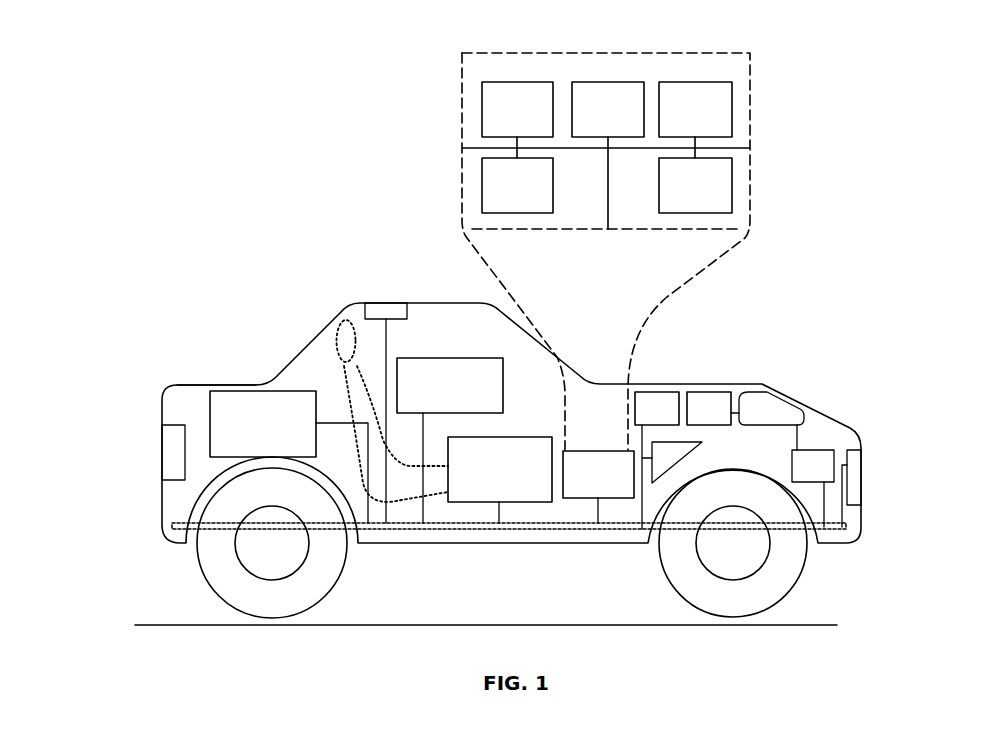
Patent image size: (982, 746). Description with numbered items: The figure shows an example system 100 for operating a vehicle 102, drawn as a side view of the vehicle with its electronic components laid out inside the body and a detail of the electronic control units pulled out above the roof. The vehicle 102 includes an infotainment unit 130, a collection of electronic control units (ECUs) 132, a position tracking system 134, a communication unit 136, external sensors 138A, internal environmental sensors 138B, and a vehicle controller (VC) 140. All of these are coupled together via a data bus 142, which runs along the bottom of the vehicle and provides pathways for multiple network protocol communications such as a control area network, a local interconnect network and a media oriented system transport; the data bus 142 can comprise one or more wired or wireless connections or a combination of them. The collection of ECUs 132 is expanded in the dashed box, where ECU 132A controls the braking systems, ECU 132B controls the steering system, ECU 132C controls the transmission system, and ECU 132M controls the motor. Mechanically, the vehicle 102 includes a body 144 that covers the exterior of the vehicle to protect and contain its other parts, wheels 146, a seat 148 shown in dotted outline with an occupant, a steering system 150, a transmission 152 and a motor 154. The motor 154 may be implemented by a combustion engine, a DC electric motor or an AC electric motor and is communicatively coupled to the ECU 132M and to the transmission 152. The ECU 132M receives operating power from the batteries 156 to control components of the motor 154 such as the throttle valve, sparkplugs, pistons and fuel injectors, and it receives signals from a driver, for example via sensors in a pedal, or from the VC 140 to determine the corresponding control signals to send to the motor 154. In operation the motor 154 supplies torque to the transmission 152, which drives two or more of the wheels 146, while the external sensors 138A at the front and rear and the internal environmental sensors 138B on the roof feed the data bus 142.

The system 100 is at (180, 169).
The vehicle 102 is at (267, 339).
The infotainment unit 130 is at (450, 440).
The collection of electronic control units (ECUs) 132 is at (606, 288).
The ECU 132A is at (517, 109).
The ECU 132B is at (608, 109).
The ECU 132C is at (695, 109).
The ECU 132M is at (517, 185).
The position tracking system 134 is at (657, 460).
The communication unit 136 is at (289, 457).
The external sensors 138A is at (162, 462).
The internal environmental sensors 138B is at (382, 302).
The vehicle controller (VC) 140 is at (500, 480).
The data bus 142 is at (462, 530).
The body 144 is at (212, 384).
The wheels 146 is at (203, 573).
The seat 148 is at (343, 316).
The steering system 150 is at (713, 408).
The transmission 152 is at (688, 452).
The motor 154 is at (789, 402).
The batteries 156 is at (823, 450).